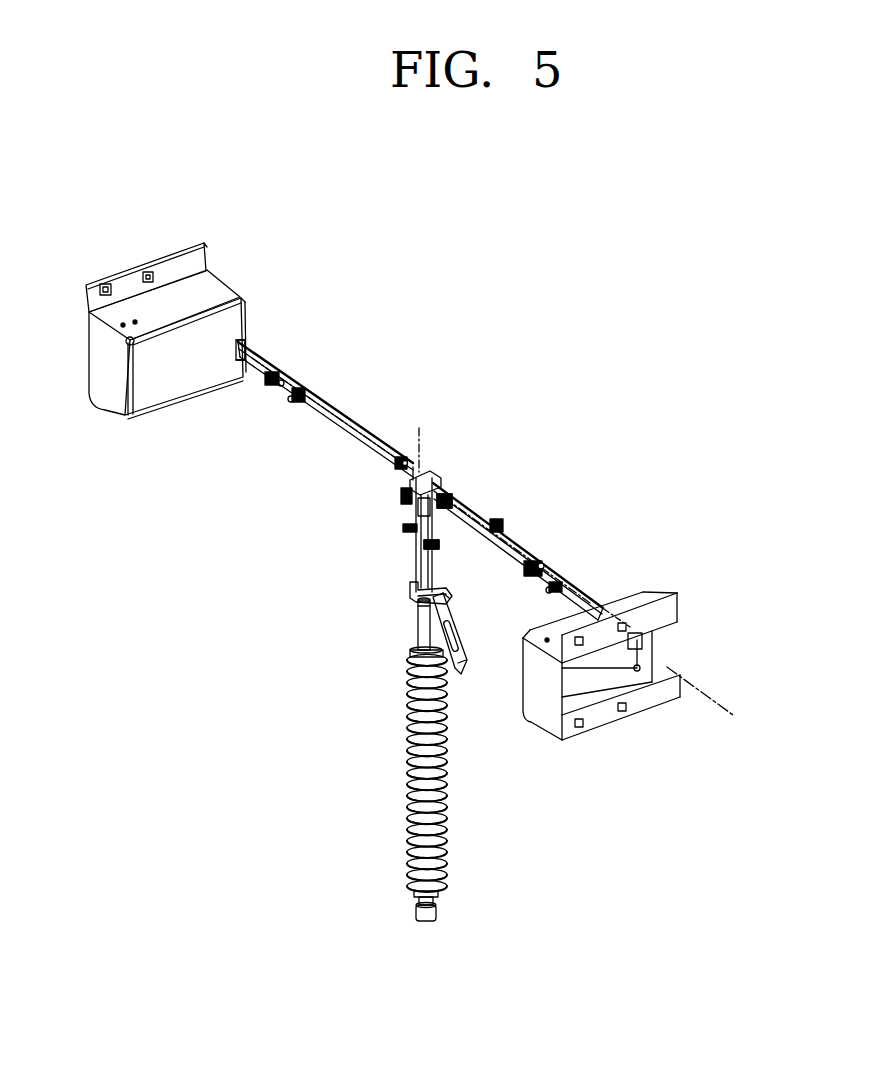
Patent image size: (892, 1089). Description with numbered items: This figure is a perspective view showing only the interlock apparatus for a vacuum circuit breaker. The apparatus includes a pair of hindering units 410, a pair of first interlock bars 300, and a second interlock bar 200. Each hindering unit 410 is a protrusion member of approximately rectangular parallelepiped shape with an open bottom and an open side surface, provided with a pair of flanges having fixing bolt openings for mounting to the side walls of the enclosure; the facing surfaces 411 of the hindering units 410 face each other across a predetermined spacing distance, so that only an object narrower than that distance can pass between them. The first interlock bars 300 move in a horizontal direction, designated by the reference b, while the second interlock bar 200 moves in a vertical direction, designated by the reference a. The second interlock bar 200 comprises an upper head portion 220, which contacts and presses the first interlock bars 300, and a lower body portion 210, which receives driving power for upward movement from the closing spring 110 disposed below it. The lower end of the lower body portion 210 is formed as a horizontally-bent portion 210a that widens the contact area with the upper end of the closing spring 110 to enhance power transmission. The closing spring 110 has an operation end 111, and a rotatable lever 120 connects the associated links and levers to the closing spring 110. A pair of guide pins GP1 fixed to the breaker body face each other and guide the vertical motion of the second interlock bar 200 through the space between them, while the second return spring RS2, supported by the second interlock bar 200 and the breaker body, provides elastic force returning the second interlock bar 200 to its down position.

The closing spring 110 is at (448, 836).
The operation end of the closing spring 111 is at (418, 633).
The lever 120 is at (457, 676).
The second interlock bar 200 is at (334, 526).
The lower body portion 210 is at (415, 575).
The horizontally-bent portion 210a is at (447, 597).
The upper head portion 220 is at (403, 492).
The first interlock bar 300 is at (433, 438).
The hindering unit 410 is at (167, 384).
The facing surfaces of the hindering units 411 is at (242, 347).
The second return spring RS2 is at (432, 506).
The guide pin GP1 is at (433, 543).
The moving direction of the second interlock bar a is at (423, 438).
The moving direction of the first interlock bars b is at (718, 703).